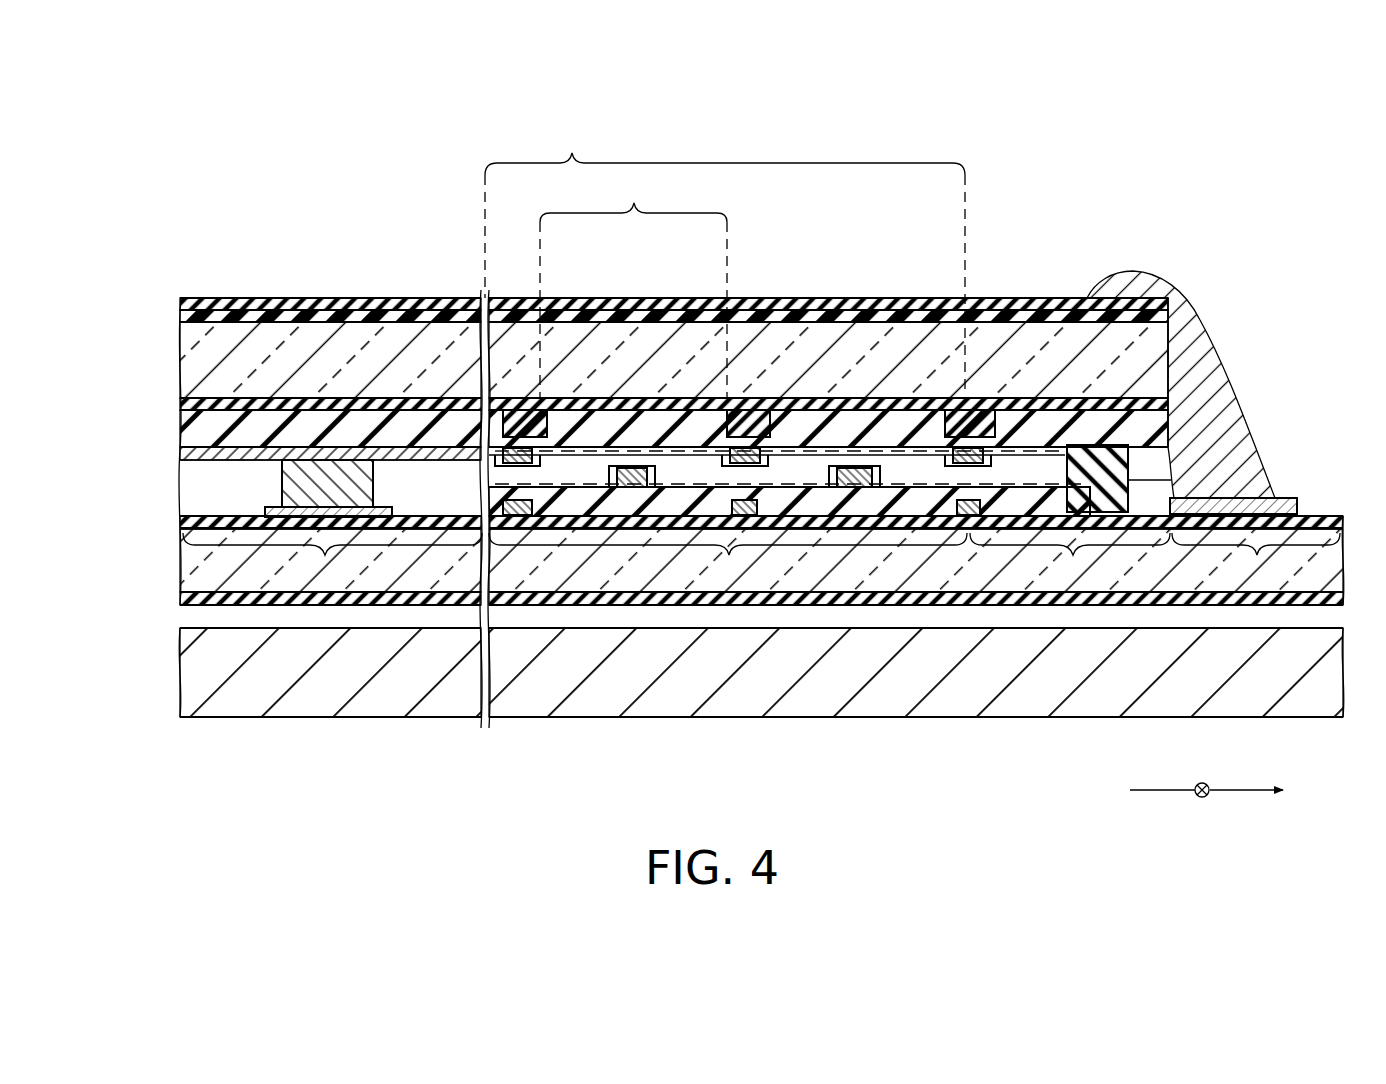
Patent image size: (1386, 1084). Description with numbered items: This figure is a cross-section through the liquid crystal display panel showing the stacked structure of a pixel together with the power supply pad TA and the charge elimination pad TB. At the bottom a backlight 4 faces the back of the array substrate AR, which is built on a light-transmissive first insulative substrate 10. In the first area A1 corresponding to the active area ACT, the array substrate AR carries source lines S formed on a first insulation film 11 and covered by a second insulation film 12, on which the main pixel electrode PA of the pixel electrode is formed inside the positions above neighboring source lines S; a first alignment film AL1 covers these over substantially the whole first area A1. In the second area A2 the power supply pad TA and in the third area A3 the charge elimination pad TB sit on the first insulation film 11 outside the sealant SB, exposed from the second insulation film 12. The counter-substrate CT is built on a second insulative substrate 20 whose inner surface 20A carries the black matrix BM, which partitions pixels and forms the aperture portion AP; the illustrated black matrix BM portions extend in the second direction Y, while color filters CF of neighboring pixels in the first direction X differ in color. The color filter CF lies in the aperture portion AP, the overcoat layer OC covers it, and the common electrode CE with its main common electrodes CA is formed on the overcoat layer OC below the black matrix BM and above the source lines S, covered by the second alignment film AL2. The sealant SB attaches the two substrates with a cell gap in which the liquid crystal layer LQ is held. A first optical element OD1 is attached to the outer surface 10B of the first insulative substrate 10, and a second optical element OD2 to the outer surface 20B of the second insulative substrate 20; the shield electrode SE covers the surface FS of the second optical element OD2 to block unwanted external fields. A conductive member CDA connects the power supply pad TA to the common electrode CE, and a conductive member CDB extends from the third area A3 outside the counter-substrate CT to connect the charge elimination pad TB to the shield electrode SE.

The backlight 4 is at (183, 690).
The first insulative substrate 10 is at (265, 575).
The outer surface of the first insulative substrate 10B is at (212, 602).
The first insulation film 11 is at (355, 525).
The second insulation film 12 is at (1022, 452).
The second insulative substrate 20 is at (237, 333).
The inner surface of the second insulative substrate 20A is at (225, 413).
The outer surface of the second insulative substrate 20B is at (208, 308).
The first optical element OD1 is at (180, 600).
The second optical element OD2 is at (180, 305).
The array substrate AR is at (172, 562).
The counter-substrate CT is at (172, 376).
The black matrix BM is at (294, 404).
The overcoat layer OC is at (358, 428).
The common electrode CE is at (182, 454).
The main common electrode CA is at (970, 452).
The color filter CF is at (640, 428).
The shield electrode SE is at (428, 304).
The surface of the second optical element FS is at (391, 298).
The liquid crystal layer LQ is at (190, 487).
The conductive member CDA is at (282, 487).
The power supply pad TA is at (393, 512).
The main pixel electrode PA is at (630, 488).
The source line S is at (512, 516).
The first alignment film AL1 is at (1040, 482).
The second alignment film AL2 is at (1040, 450).
The active area ACT is at (725, 261).
The aperture portion AP is at (633, 288).
The first area A1 is at (728, 559).
The second area A2 is at (676, 559).
The third area A3 is at (1256, 557).
The sealant SB is at (1110, 470).
The charge elimination pad TB is at (1282, 492).
The conductive member CDB is at (1195, 298).
The first direction X is at (1220, 790).
The second direction Y is at (1201, 818).